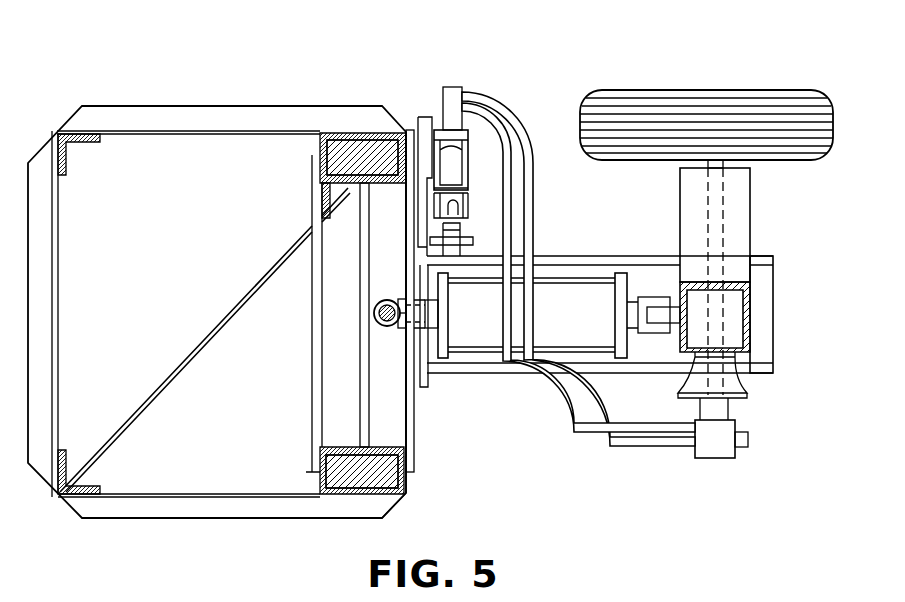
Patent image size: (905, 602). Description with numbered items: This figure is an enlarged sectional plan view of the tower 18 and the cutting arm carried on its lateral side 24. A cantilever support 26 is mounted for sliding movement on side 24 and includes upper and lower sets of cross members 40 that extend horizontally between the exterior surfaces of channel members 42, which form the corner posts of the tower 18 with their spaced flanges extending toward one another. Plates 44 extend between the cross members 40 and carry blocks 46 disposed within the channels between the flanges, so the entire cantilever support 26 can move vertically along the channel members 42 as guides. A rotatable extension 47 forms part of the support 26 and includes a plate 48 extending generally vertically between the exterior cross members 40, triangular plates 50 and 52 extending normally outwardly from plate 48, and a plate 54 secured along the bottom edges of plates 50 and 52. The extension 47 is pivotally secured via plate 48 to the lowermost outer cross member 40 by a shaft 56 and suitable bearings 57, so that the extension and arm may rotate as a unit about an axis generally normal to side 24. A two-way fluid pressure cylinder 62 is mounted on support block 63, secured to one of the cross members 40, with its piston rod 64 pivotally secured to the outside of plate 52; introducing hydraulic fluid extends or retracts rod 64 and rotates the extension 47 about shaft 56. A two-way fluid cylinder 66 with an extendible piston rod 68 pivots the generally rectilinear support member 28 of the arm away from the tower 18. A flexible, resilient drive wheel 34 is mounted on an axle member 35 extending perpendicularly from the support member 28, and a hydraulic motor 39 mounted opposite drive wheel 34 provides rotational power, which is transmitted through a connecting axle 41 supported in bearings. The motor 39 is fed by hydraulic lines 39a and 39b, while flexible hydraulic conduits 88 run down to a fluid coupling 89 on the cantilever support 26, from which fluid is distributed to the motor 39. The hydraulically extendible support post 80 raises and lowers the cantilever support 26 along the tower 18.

The tower 18 is at (250, 277).
The lateral side 24 is at (408, 484).
The cantilever support member 26 is at (493, 438).
The support member 28 is at (748, 323).
The drive wheel 34 is at (652, 91).
The axle member 35 is at (740, 229).
The hydraulic motor 39 is at (740, 458).
The hydraulic line 39a is at (603, 447).
The hydraulic line 39b is at (667, 433).
The cross members 40 is at (414, 422).
The connecting axle 41 is at (718, 200).
The channel members 42 is at (320, 135).
The plates 44 is at (337, 447).
The blocks 46 is at (384, 142).
The rotatable extension 47 is at (792, 344).
The plate 48 is at (430, 381).
The triangular plate 50 is at (583, 364).
The triangular plate 52 is at (582, 256).
The plate 54 is at (773, 282).
The shaft 56 is at (438, 318).
The bearings 57 is at (400, 332).
The two-way fluid pressure cylinder 62 is at (456, 160).
The support block 63 is at (431, 117).
The piston rod 64 is at (459, 206).
The two-way fluid cylinder 66 is at (531, 315).
The piston rod 68 is at (658, 324).
The support post 80 is at (388, 300).
The flexible hydraulic conduits 88 is at (454, 108).
The fluid coupling 89 is at (471, 107).